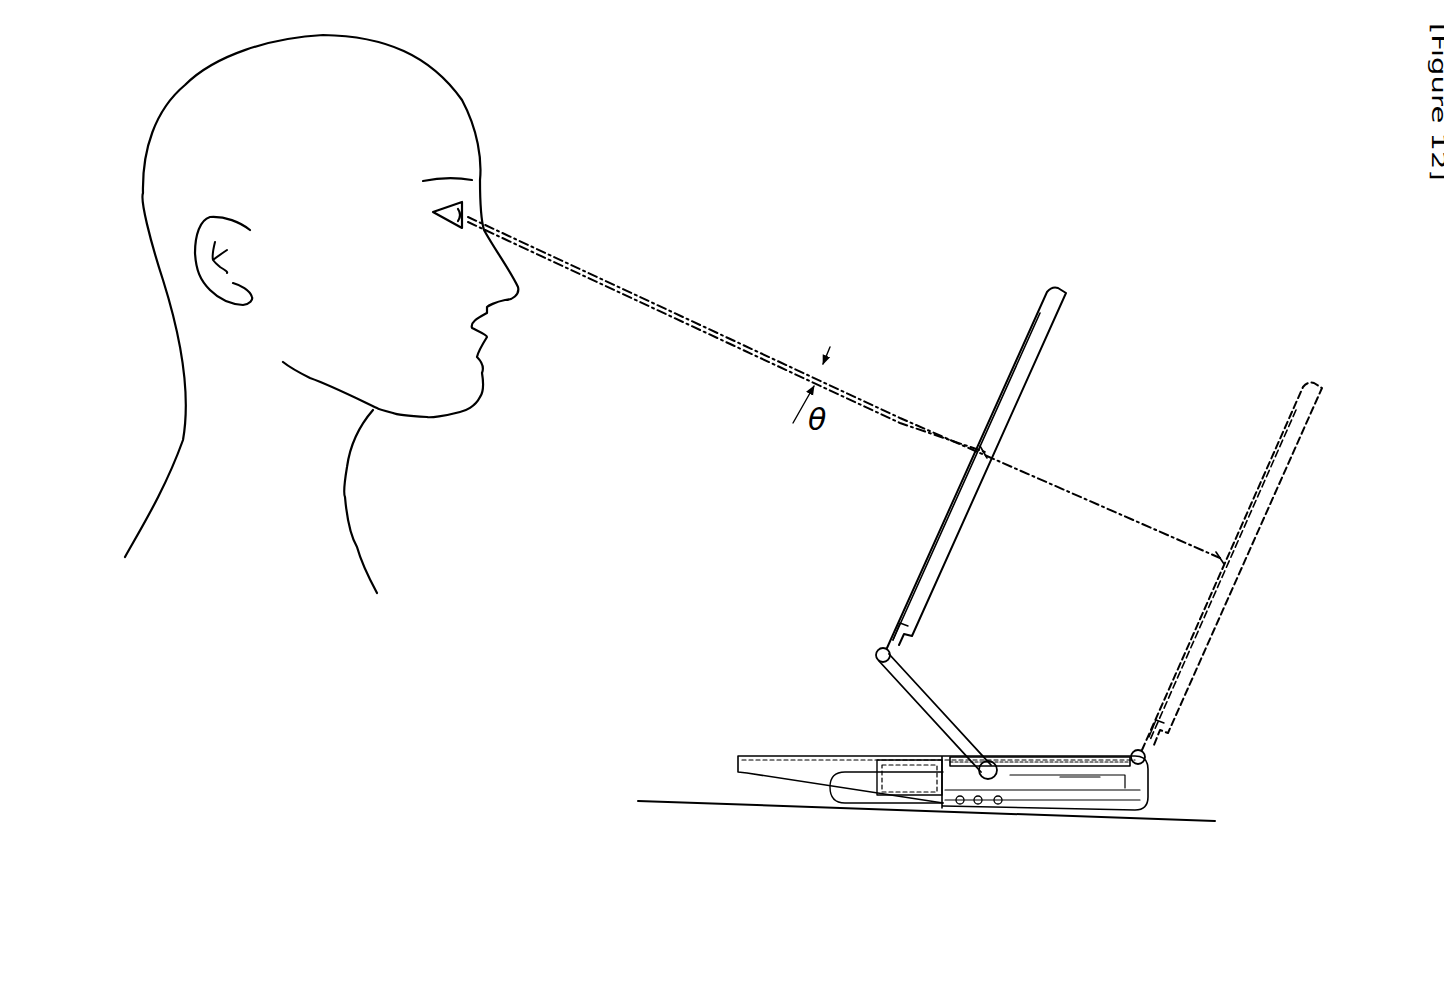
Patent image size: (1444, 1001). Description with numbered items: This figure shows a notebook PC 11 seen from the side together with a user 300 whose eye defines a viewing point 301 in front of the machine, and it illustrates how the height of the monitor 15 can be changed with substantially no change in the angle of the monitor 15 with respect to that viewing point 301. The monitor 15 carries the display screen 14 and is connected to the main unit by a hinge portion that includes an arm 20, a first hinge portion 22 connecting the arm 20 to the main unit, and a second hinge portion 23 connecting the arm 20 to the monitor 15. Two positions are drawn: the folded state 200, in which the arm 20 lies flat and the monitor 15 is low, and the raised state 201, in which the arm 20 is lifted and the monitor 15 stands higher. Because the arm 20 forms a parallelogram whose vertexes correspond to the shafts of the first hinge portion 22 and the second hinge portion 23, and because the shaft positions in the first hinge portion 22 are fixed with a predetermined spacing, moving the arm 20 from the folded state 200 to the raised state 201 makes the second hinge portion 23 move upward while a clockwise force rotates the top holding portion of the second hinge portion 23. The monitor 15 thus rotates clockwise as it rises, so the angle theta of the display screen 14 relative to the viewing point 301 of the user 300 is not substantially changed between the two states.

The notebook PC 11 is at (808, 740).
The display screen 14 is at (1022, 357).
The monitor 15 is at (927, 583).
The arm 20 is at (933, 708).
The first hinge portion 22 is at (998, 757).
The second hinge portion 23 is at (876, 652).
The folded state 200 is at (1306, 372).
The raised state 201 is at (1073, 289).
The user 300 is at (337, 510).
The viewing point 301 is at (467, 213).